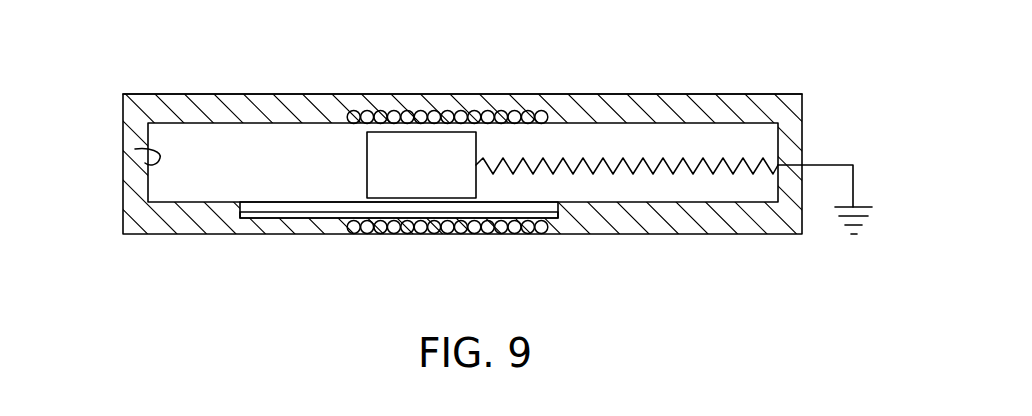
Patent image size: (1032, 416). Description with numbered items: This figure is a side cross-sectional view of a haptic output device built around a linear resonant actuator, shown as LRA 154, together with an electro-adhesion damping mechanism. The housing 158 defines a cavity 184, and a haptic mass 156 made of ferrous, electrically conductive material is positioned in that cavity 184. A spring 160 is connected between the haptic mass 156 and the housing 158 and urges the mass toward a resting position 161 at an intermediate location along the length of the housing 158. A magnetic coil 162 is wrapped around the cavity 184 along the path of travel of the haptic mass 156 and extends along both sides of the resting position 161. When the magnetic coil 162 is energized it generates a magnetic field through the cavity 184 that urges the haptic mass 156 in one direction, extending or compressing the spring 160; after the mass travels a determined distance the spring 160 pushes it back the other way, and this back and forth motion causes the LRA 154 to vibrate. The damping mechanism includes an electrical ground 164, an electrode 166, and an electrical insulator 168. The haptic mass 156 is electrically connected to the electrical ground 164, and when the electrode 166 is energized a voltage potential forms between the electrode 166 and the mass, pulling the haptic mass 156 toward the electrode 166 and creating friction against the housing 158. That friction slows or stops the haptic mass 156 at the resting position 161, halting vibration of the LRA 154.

The linear resonant actuator (LRA) 154 is at (653, 94).
The haptic mass 156 is at (367, 158).
The housing 158 is at (218, 94).
The spring 160 is at (718, 172).
The resting position 161 is at (452, 235).
The magnetic coil 162 is at (392, 112).
The electrical ground 164 is at (853, 165).
The electrode 166 is at (242, 215).
The electrical insulator 168 is at (240, 206).
The cavity 184 is at (135, 149).